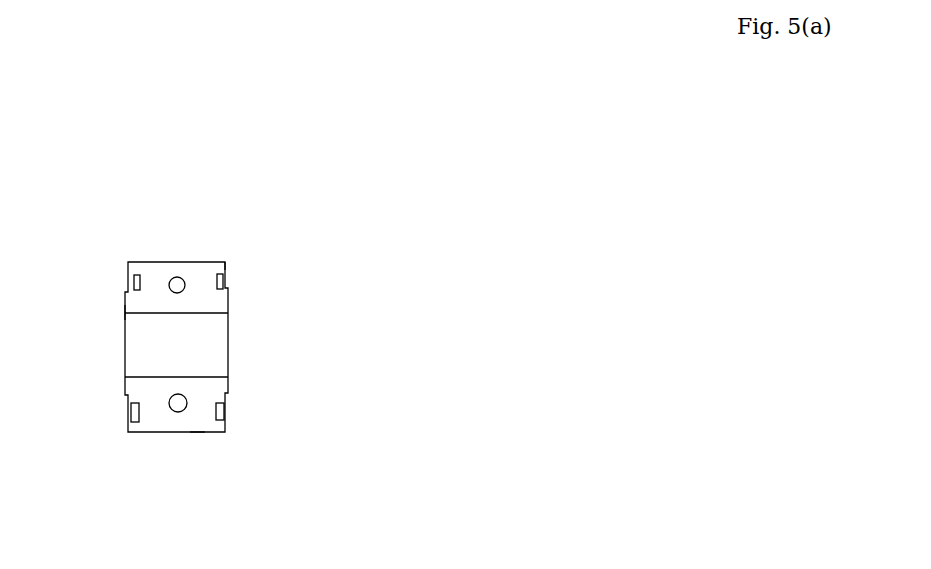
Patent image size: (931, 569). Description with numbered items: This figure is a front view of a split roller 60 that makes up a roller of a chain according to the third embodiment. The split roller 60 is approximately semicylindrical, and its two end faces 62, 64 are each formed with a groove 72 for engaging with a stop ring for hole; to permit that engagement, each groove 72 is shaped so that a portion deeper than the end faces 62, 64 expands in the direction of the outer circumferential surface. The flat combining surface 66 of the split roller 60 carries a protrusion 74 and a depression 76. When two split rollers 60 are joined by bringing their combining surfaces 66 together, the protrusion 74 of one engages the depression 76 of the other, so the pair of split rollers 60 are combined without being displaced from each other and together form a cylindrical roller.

The split roller 60 is at (186, 160).
The end face 62 is at (228, 265).
The end face 64 is at (125, 313).
The combining surface 66 is at (197, 425).
The groove 72 is at (134, 415).
The protrusion 74 is at (170, 286).
The depression 76 is at (172, 410).